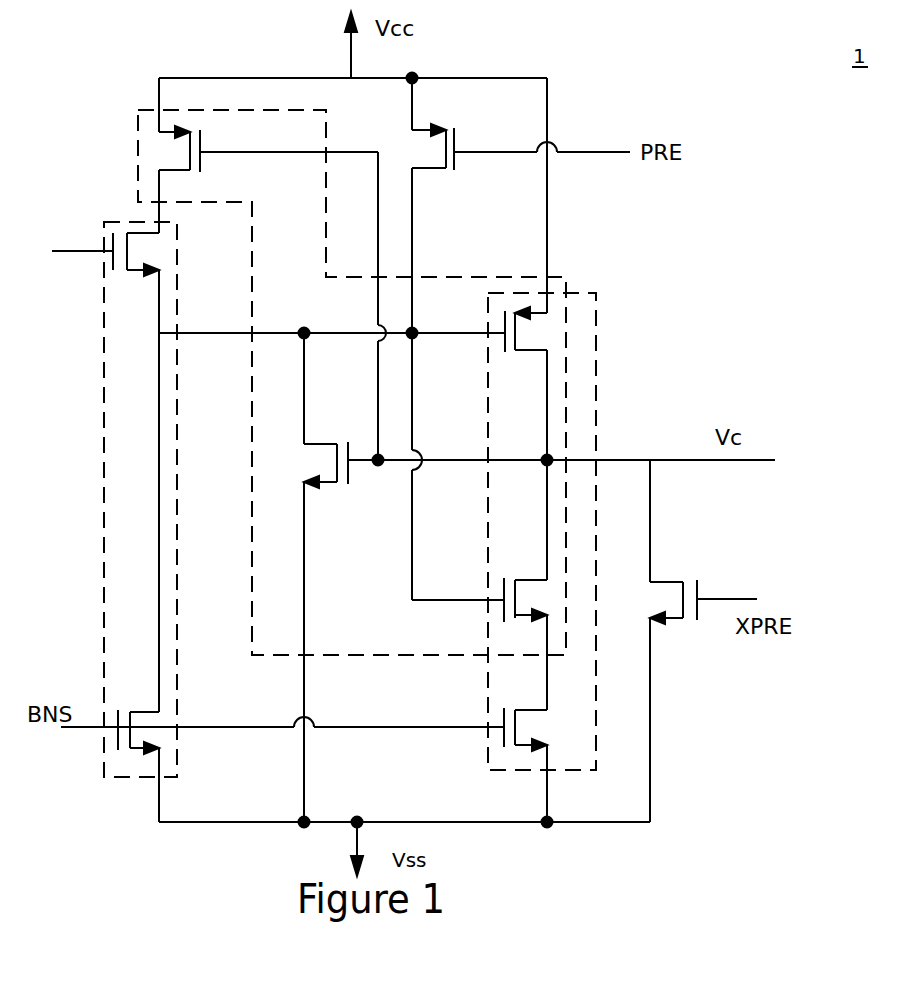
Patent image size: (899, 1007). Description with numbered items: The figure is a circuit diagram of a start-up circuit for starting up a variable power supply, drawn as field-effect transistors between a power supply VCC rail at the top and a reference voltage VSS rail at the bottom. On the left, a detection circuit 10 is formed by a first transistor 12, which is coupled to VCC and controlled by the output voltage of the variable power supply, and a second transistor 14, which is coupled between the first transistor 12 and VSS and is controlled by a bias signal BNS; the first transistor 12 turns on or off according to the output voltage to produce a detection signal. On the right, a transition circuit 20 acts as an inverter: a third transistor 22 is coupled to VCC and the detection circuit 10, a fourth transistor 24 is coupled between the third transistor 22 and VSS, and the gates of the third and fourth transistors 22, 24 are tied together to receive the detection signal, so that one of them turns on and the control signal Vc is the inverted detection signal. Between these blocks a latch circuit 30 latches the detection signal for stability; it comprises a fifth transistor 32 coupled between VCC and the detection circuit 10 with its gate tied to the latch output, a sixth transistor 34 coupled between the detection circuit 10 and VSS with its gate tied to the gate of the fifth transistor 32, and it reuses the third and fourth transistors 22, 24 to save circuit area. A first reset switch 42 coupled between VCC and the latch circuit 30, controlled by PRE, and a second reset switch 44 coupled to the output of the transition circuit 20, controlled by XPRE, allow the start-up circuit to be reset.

The detection circuit 10 is at (177, 229).
The first transistor 12 is at (127, 252).
The second transistor 14 is at (140, 712).
The transition circuit 20 is at (596, 405).
The third transistor 22 is at (517, 340).
The fourth transistor 24 is at (515, 593).
The latch circuit 30 is at (327, 143).
The fifth transistor 32 is at (202, 143).
The sixth transistor 34 is at (320, 443).
The first reset switch 42 is at (457, 143).
The second reset switch 44 is at (697, 592).